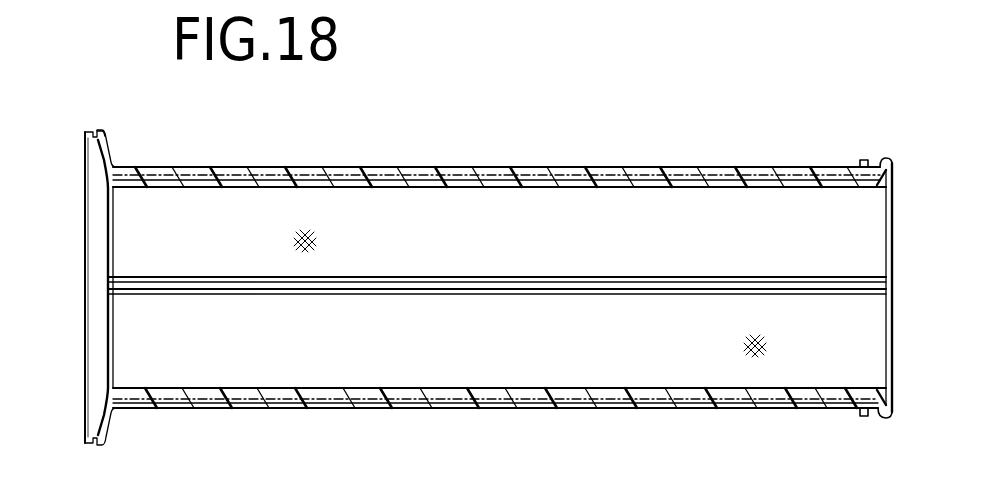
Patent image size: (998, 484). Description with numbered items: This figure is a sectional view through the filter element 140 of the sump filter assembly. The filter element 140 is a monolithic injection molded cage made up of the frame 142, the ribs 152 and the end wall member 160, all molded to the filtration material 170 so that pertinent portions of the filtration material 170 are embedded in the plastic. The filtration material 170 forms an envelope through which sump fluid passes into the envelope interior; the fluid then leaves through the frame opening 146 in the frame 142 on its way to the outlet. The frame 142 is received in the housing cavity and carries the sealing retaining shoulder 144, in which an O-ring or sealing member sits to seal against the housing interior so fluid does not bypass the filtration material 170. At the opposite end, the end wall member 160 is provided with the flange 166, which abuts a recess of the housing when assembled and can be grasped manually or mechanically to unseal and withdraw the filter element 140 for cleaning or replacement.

The filter element 140 is at (353, 420).
The frame 142 is at (887, 176).
The sealing retaining shoulder 144 is at (877, 162).
The frame opening 146 is at (892, 246).
The rib 152 is at (412, 185).
The end wall member 160 is at (108, 247).
The flange 166 is at (104, 148).
The filtration material 170 is at (208, 208).